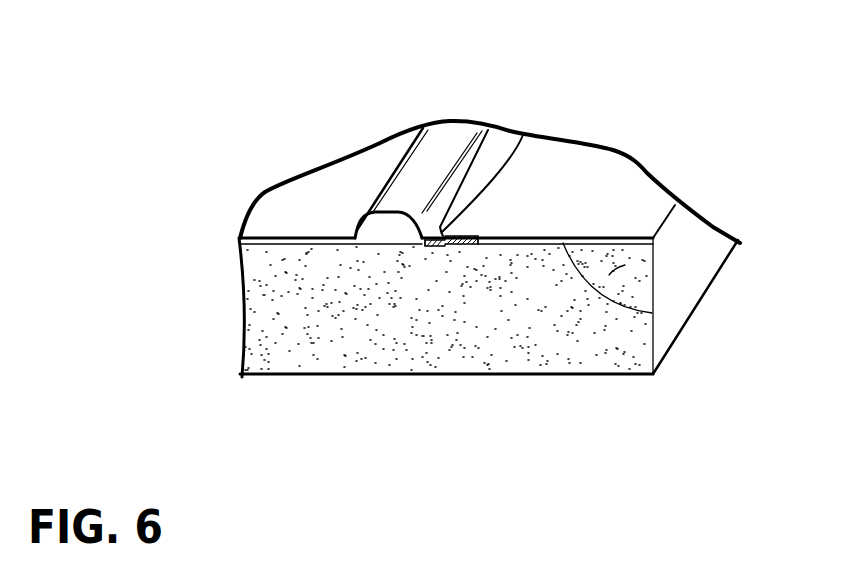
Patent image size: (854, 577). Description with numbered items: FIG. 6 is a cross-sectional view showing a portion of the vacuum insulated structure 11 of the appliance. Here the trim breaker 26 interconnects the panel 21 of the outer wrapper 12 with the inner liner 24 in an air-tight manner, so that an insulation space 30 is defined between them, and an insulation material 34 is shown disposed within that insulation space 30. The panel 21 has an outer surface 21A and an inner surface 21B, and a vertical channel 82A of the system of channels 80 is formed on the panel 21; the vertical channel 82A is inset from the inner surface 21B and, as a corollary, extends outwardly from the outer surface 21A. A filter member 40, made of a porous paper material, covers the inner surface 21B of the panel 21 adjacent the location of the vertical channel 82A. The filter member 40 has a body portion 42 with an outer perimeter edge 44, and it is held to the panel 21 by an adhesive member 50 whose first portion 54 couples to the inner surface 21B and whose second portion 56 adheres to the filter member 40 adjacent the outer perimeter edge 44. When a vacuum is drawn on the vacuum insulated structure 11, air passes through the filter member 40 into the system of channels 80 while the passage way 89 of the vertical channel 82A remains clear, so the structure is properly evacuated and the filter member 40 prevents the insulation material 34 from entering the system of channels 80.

The vacuum insulated structure 11 is at (325, 97).
The outer wrapper 12 is at (619, 192).
The panel 21 is at (552, 135).
The outer surface 21A is at (573, 225).
The inner surface 21B is at (652, 313).
The inner liner 24 is at (423, 375).
The trim breaker 26 is at (697, 237).
The insulation space 30 is at (560, 328).
The insulation material 34 is at (605, 277).
The filter member 40 is at (358, 246).
The body portion 42 is at (283, 248).
The outer perimeter edge 44 is at (523, 133).
The adhesive member 50 is at (460, 249).
The first portion 54 is at (470, 247).
The second portion 56 is at (433, 250).
The system of channels 80 is at (397, 158).
The vertical channel 82A is at (393, 212).
The passage way 89 is at (377, 232).